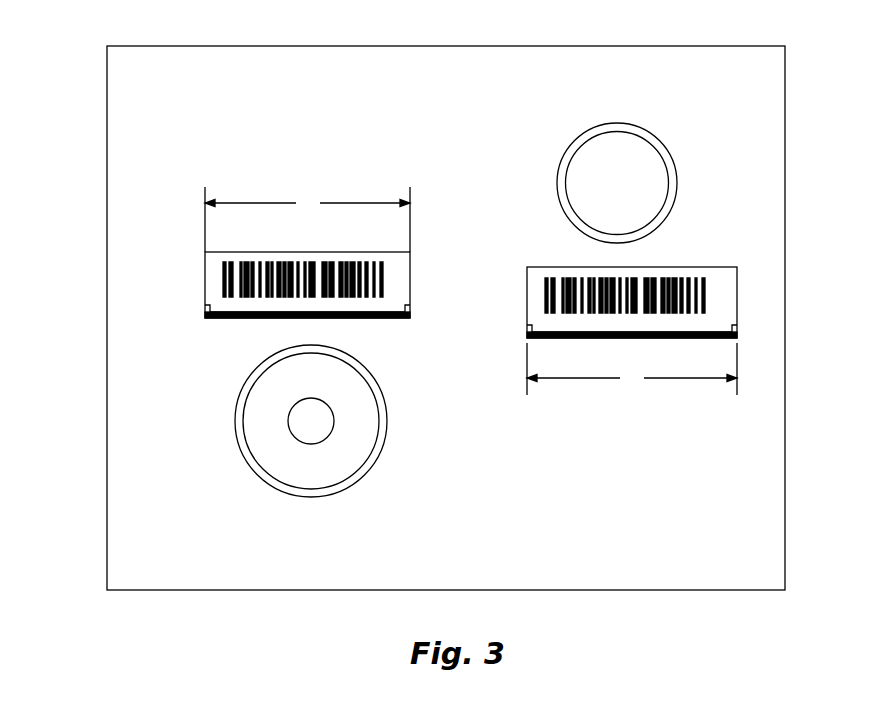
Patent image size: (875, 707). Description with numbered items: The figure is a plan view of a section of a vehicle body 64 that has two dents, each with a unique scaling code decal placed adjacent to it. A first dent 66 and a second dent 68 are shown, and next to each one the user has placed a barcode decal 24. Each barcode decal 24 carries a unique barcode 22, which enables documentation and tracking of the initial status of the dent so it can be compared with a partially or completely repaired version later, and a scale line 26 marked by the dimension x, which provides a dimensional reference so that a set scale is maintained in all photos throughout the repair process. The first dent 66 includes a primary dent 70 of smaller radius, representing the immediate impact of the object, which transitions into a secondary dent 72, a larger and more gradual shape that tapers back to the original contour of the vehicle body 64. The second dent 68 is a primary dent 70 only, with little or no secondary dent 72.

The barcode 22 is at (220, 268).
The barcode decal 24 is at (213, 277).
The scale line 26 is at (248, 320).
The vehicle body 64 is at (628, 548).
The first dent 66 is at (243, 487).
The second dent 68 is at (688, 147).
The primary dent 70 is at (619, 143).
The secondary dent 72 is at (260, 433).